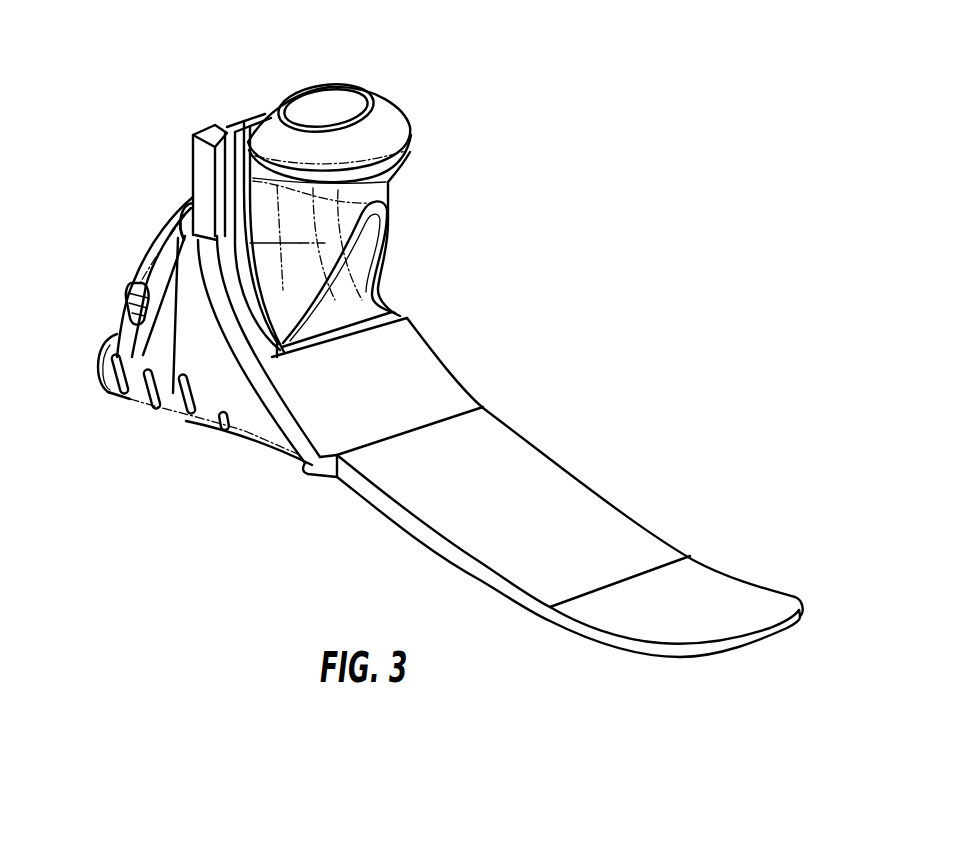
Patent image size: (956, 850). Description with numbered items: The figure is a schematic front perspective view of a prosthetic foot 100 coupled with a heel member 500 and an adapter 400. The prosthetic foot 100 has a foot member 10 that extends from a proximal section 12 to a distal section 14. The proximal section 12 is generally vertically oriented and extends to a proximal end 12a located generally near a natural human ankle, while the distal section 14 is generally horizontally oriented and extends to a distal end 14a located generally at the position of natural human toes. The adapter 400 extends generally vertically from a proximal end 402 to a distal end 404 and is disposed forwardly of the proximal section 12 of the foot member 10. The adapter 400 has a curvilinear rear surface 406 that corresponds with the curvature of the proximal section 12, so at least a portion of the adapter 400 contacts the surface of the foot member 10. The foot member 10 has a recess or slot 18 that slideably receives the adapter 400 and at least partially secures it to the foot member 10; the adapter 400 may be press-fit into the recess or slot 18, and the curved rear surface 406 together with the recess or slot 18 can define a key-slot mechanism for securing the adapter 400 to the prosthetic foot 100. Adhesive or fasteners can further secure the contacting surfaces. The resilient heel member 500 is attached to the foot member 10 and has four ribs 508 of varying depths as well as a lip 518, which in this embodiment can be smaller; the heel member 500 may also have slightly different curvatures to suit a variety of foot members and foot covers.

The prosthetic foot 100 is at (641, 310).
The foot member 10 is at (565, 463).
The proximal section 12 is at (190, 182).
The proximal end 12a is at (203, 124).
The distal section 14 is at (804, 595).
The distal end 14a is at (792, 636).
The recess or slot 18 is at (223, 127).
The adapter 400 is at (412, 170).
The proximal end 402 is at (405, 107).
The distal end 404 is at (410, 318).
The curvilinear rear surface 406 is at (236, 263).
The heel member 500 is at (96, 397).
The ribs 508 is at (222, 432).
The lip 518 is at (107, 340).